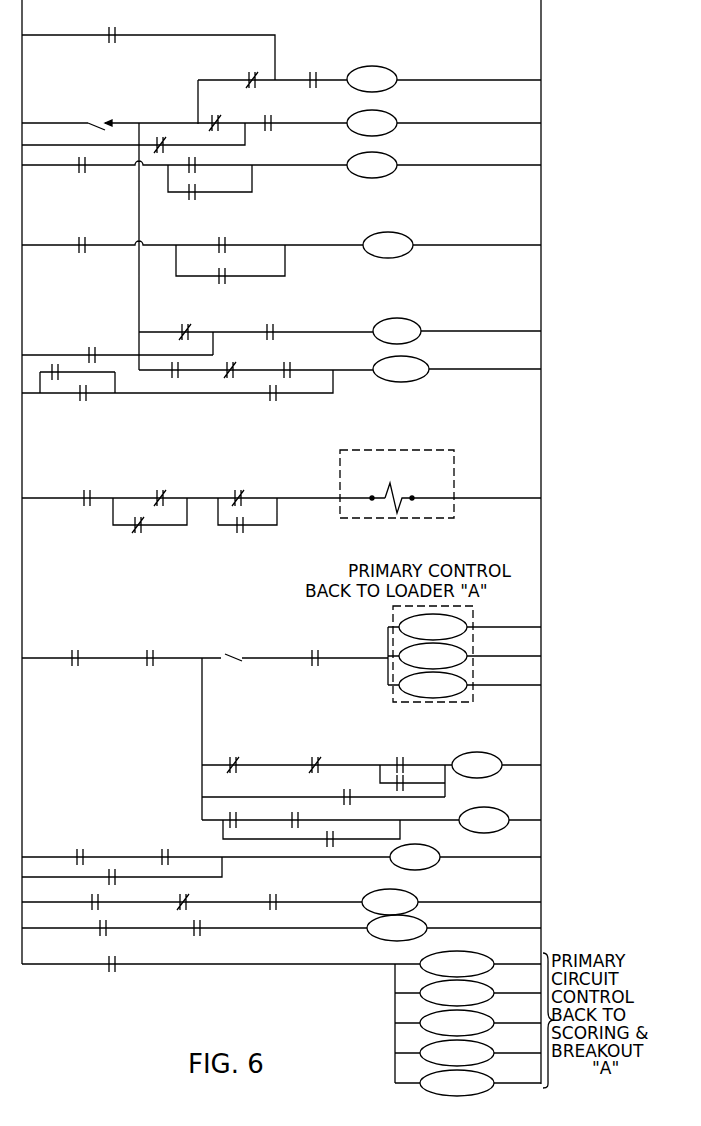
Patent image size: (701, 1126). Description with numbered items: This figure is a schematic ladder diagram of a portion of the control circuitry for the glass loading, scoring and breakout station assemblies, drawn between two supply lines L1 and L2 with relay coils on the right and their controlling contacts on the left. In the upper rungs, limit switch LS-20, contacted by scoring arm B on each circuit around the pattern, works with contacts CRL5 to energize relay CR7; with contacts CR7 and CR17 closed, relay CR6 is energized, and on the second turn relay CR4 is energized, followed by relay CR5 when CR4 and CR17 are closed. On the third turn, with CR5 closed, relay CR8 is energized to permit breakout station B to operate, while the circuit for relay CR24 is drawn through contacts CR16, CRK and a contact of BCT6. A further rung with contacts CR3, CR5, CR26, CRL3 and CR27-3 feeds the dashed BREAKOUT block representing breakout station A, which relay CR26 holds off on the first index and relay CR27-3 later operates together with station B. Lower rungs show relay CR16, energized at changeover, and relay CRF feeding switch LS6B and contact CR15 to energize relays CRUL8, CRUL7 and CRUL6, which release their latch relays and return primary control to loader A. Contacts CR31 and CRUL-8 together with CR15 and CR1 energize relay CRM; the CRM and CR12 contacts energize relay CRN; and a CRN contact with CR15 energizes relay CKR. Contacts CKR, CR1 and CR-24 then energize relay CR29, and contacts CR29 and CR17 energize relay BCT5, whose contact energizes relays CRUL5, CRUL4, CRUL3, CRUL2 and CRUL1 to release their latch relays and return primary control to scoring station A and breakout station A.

The power line L1 is at (30, 482).
The power line L2 is at (525, 542).
The relay CR-4 CR4 is at (238, 131).
The relay CR-6 CR6 is at (293, 126).
The relay CR-7 CR7 is at (238, 133).
The limit switch LS-20 is at (91, 114).
The contacts CRL-5 CRL5 is at (290, 112).
The relay CR-17 CR17 is at (228, 539).
The relay CR-5 CR5 is at (283, 369).
The relay CR-8 CR8 is at (255, 335).
The relay CR-16 CR16 is at (52, 366).
The relay CR-24 CR24 is at (326, 378).
The relay CRK is at (216, 614).
The timer BCT6 contact BCT6 is at (104, 399).
The control relay CR3 contact CR3 is at (99, 487).
The relay CR-26 CR26 is at (254, 487).
The latch relay CRL-3 CRL3 is at (157, 533).
The relay CR-27-3 CR27-3 is at (269, 533).
The breakout station A BREAKOUT is at (397, 484).
The relay CRF is at (166, 648).
The switch LS-6B LS6B is at (239, 646).
The contact CR-15 CR15 is at (262, 748).
The relay CRUL-8 CRUL8 is at (433, 627).
The relay CRUL-7 CRUL7 is at (433, 656).
The relay CRUL-6 CRUL6 is at (433, 685).
The control relay CR31 contact CR31 is at (254, 755).
The relay CRUL-8 is at (343, 755).
The control relay CR1 contacts CR1 is at (307, 837).
The relay CRM is at (366, 790).
The contacts CR-12 CR12 is at (317, 813).
The relay CRN is at (335, 836).
The relay CKR contact and coil CKR is at (242, 877).
The contact CR-24 is at (297, 894).
The relay CR-29 CR29 is at (259, 912).
The relay BCT-5 BCT5 is at (268, 943).
The relay CRUL-5 CRUL5 is at (457, 964).
The relay CRUL-4 CRUL4 is at (457, 993).
The relay CRUL-3 CRUL3 is at (457, 1023).
The relay CRUL-2 CRUL2 is at (457, 1053).
The relay CRUL-1 CRUL1 is at (457, 1083).